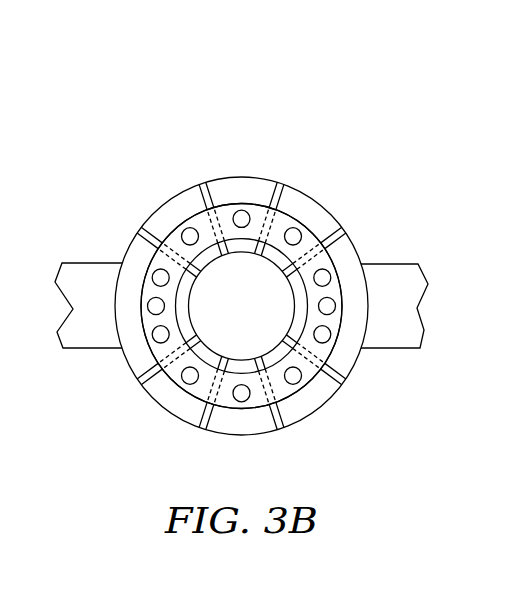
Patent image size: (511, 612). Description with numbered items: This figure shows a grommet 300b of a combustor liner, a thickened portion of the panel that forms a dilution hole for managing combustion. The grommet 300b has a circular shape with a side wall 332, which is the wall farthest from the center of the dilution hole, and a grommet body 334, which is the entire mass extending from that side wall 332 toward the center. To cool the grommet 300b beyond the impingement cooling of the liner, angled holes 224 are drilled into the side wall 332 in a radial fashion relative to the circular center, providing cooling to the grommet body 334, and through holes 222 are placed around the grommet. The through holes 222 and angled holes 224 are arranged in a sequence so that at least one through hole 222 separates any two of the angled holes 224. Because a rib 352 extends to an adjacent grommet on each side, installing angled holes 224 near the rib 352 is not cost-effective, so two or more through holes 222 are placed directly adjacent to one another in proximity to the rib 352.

The grommet 300b is at (373, 110).
The through holes 222 is at (298, 383).
The angled holes 224 is at (202, 183).
The side wall 332 is at (327, 204).
The grommet body 334 is at (349, 262).
The rib 352 is at (92, 335).